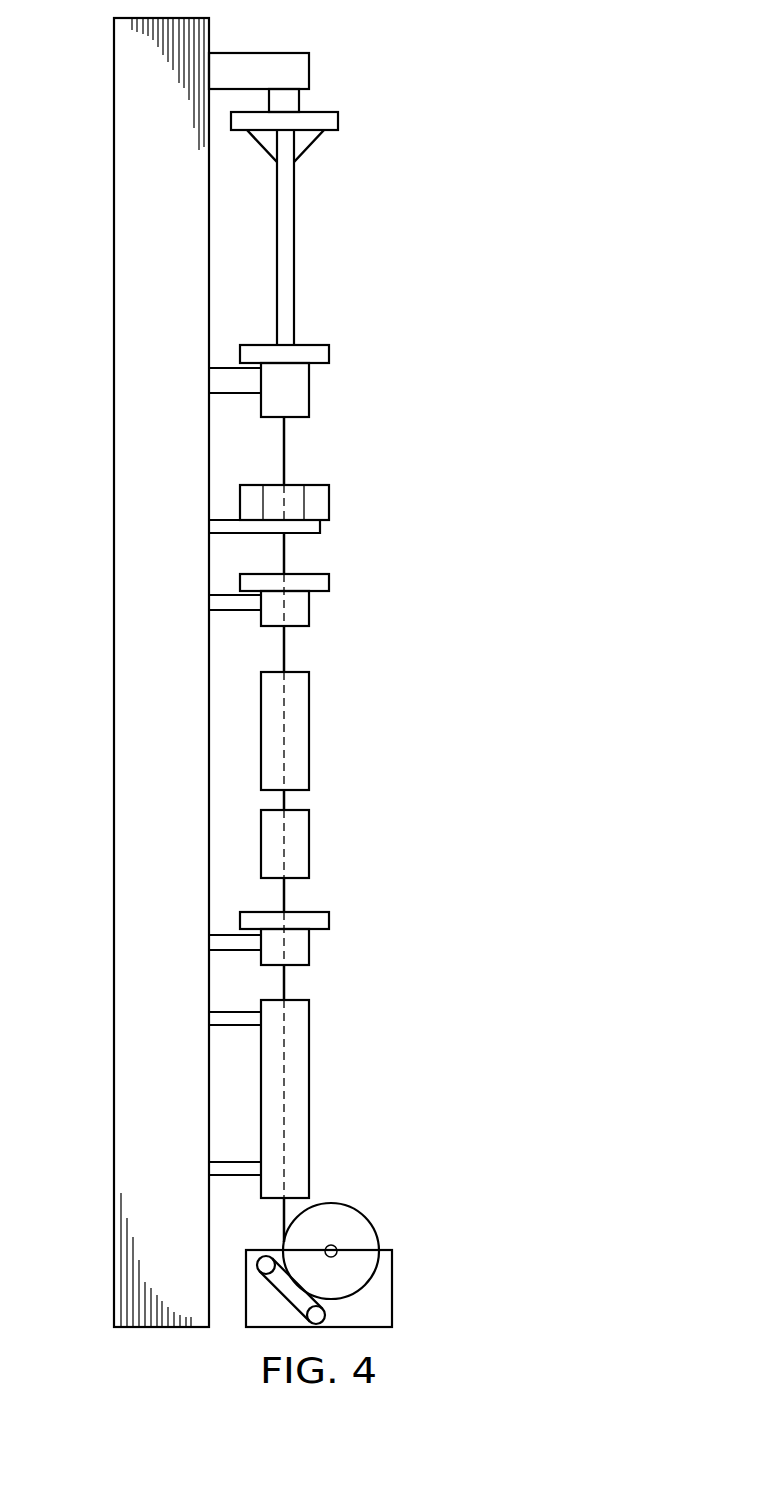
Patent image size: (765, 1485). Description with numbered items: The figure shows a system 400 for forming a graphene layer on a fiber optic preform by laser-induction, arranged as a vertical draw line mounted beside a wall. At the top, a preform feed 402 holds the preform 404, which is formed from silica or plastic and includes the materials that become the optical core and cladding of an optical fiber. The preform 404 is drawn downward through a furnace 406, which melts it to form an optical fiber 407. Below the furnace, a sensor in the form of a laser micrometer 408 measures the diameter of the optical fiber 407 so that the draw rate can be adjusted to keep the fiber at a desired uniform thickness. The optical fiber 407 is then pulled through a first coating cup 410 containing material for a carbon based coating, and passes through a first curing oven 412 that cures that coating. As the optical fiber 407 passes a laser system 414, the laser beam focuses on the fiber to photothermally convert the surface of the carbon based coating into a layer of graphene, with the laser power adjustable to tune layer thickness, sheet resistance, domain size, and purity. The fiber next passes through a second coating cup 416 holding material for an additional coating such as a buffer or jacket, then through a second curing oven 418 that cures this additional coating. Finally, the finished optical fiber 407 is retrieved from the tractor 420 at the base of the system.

The system 400 is at (462, 80).
The preform feed 402 is at (339, 120).
The preform 404 is at (295, 238).
The furnace 406 is at (331, 354).
The optical fiber 407 is at (287, 450).
The laser micrometer 408 is at (331, 503).
The first coating cup 410 is at (311, 612).
The first curing oven 412 is at (311, 730).
The laser system 414 is at (311, 843).
The second coating cup 416 is at (311, 952).
The second curing oven 418 is at (311, 1098).
The tractor 420 is at (393, 1290).